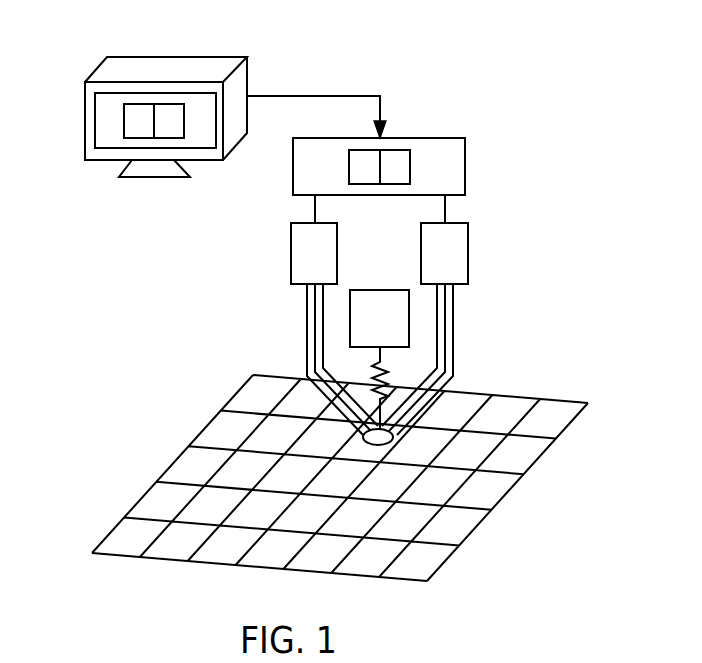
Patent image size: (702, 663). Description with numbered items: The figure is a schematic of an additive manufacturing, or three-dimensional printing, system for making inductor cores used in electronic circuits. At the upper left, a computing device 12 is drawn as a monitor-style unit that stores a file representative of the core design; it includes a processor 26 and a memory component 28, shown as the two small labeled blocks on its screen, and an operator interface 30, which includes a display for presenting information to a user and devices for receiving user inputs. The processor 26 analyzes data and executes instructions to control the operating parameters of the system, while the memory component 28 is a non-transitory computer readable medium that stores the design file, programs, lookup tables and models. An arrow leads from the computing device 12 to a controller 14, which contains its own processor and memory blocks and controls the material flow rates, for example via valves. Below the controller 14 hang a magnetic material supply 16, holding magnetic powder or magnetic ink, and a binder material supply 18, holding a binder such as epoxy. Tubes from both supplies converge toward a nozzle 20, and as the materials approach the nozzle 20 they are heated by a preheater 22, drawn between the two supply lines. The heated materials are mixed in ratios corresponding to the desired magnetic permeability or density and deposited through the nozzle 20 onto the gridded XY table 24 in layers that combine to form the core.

The computing device 12 is at (173, 57).
The controller 14 is at (422, 138).
The magnetic material supply 16 is at (291, 255).
The binder material supply 18 is at (468, 255).
The nozzle 20 is at (395, 441).
The preheater 22 is at (377, 290).
The XY table 24 is at (453, 522).
The processor 26 is at (125, 122).
The memory component 28 is at (185, 122).
The operator interface 30 is at (110, 107).